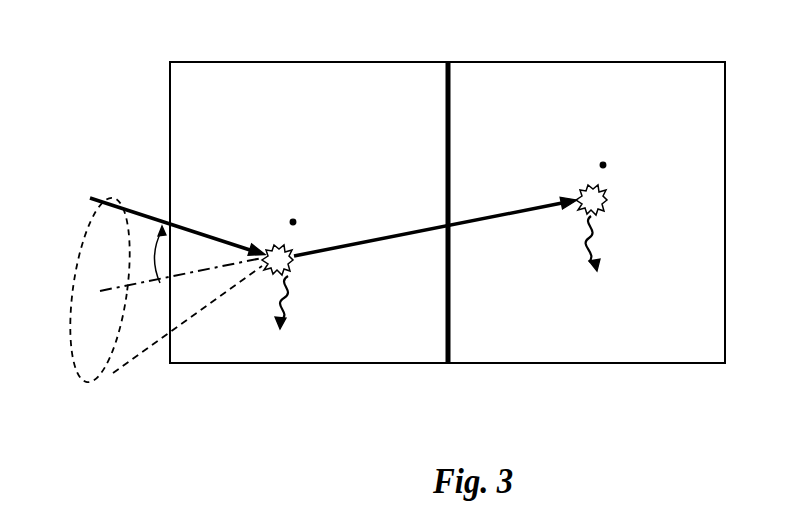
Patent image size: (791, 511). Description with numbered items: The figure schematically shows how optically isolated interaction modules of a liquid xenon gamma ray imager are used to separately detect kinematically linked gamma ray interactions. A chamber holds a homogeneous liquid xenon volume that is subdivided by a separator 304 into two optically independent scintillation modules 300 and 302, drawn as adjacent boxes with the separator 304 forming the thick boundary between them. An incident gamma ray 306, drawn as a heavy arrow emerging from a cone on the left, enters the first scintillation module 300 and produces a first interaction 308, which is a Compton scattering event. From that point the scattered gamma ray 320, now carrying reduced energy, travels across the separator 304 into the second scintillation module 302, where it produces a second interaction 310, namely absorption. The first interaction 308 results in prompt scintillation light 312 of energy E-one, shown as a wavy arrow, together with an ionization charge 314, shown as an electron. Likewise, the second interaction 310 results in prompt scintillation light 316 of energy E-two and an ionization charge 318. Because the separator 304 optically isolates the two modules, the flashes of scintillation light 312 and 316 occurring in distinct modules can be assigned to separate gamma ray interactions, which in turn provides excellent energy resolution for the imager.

The scintillation module 300 is at (309, 212).
The scintillation module 302 is at (586, 212).
The separator 304 is at (442, 68).
The incident gamma ray 306 is at (103, 200).
The first interaction 308 is at (296, 264).
The second interaction 310 is at (609, 207).
The prompt scintillation light 312 is at (270, 310).
The ionization charge 314 is at (292, 221).
The prompt scintillation light 316 is at (584, 237).
The ionization charge 318 is at (602, 164).
The scattered gamma ray 320 is at (403, 232).